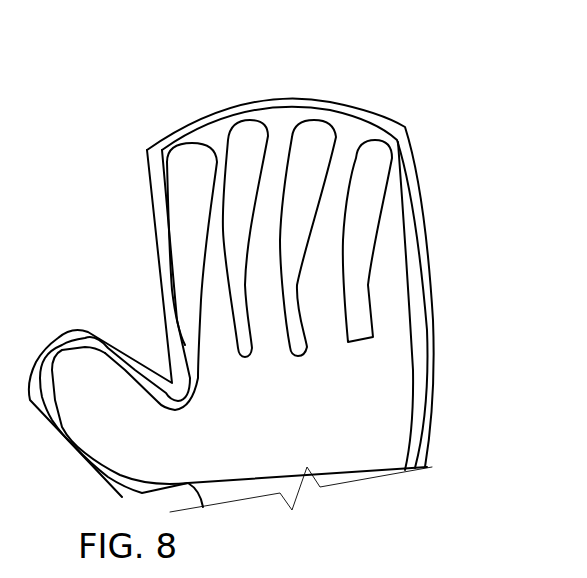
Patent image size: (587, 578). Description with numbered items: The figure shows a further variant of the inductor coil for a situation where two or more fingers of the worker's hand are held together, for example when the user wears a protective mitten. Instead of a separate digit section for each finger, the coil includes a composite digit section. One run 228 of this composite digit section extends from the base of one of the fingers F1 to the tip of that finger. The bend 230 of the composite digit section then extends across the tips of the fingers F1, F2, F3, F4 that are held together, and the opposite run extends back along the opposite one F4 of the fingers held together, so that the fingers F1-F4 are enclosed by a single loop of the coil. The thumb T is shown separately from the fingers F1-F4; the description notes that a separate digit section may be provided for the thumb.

The bend 230 is at (163, 143).
The run 228 is at (153, 240).
The thumb pocket T is at (89, 370).
The finger F1 is at (380, 187).
The finger F2 is at (318, 165).
The finger F3 is at (247, 160).
The finger F4 is at (187, 170).